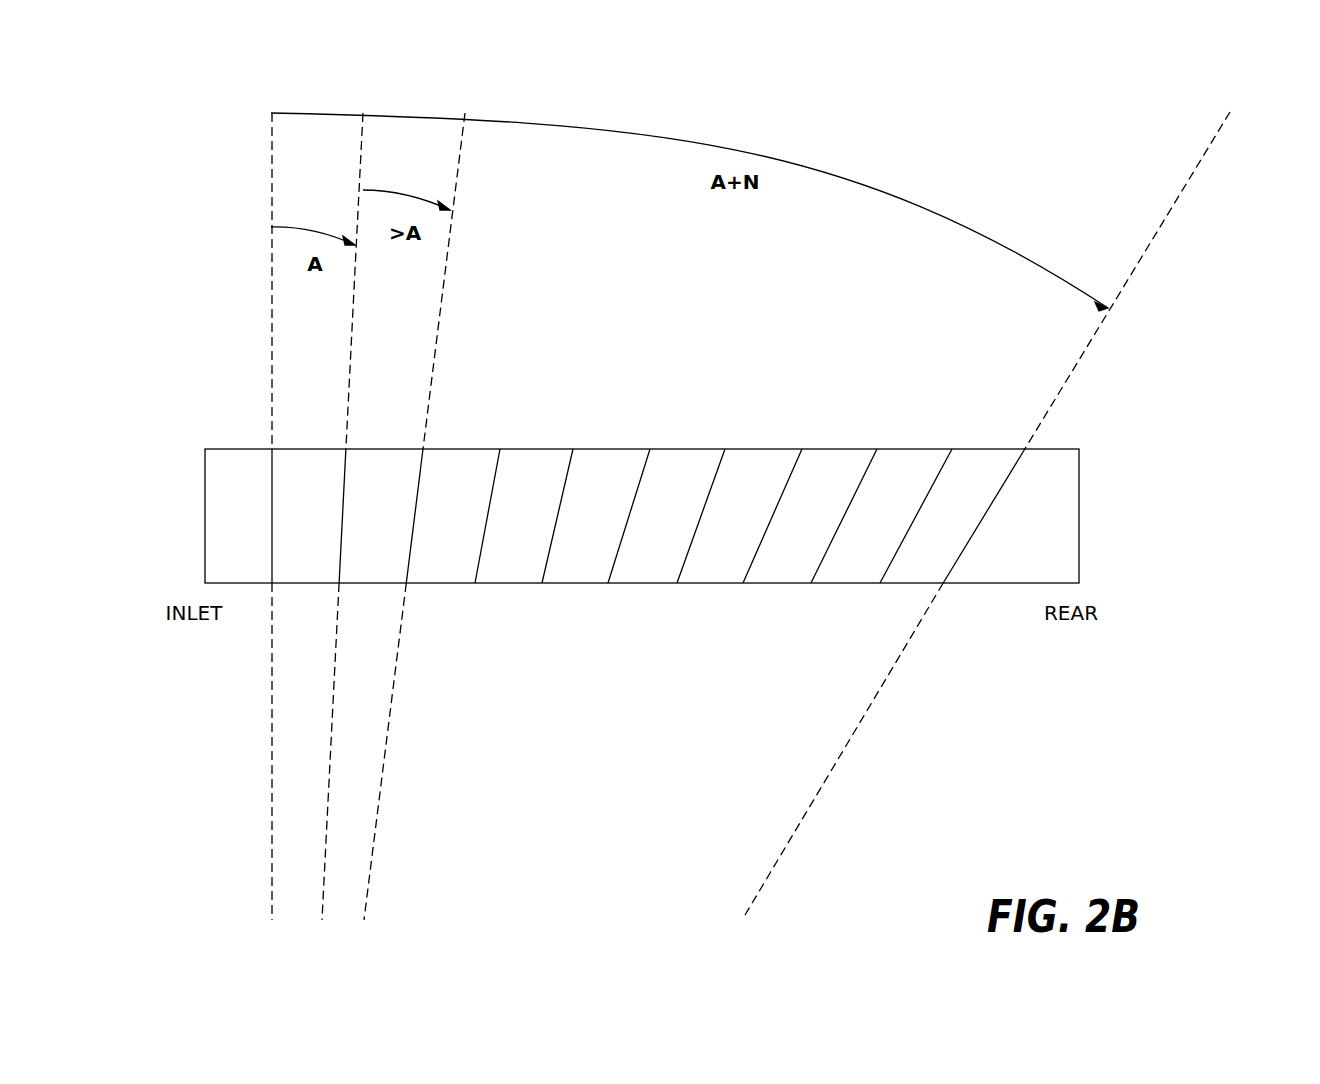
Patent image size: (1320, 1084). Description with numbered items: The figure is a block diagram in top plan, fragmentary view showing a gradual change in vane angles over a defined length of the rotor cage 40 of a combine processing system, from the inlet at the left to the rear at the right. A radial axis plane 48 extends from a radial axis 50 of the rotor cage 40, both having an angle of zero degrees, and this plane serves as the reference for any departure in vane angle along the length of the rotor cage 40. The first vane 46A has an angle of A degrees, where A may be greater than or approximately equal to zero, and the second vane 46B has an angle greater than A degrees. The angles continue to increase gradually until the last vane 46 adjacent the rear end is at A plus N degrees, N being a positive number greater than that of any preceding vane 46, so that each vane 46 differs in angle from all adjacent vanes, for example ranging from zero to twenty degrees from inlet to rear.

The rotor cage 40 is at (758, 449).
The vane 46 is at (997, 498).
The first vane 46A is at (343, 498).
The second vane 46B is at (417, 512).
The radial axis plane 48 is at (272, 330).
The radial axis 50 is at (272, 545).